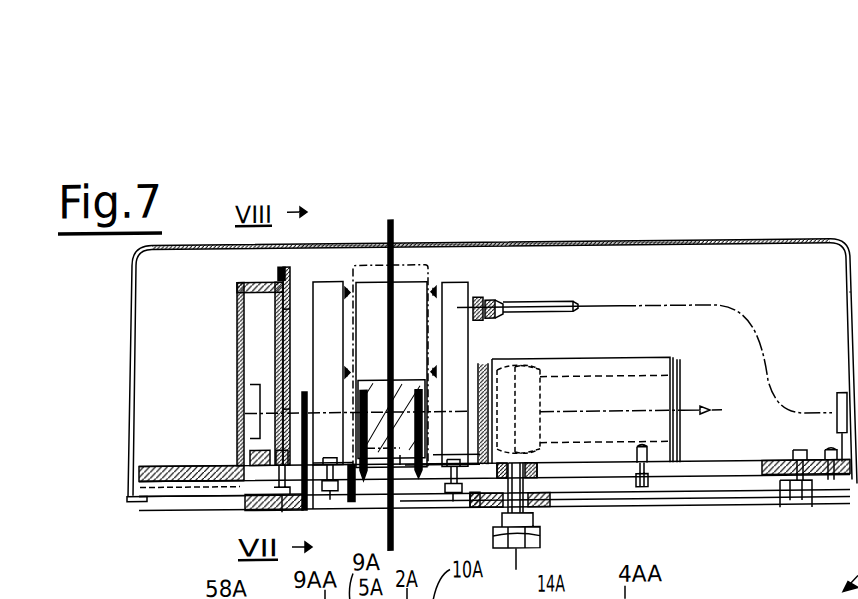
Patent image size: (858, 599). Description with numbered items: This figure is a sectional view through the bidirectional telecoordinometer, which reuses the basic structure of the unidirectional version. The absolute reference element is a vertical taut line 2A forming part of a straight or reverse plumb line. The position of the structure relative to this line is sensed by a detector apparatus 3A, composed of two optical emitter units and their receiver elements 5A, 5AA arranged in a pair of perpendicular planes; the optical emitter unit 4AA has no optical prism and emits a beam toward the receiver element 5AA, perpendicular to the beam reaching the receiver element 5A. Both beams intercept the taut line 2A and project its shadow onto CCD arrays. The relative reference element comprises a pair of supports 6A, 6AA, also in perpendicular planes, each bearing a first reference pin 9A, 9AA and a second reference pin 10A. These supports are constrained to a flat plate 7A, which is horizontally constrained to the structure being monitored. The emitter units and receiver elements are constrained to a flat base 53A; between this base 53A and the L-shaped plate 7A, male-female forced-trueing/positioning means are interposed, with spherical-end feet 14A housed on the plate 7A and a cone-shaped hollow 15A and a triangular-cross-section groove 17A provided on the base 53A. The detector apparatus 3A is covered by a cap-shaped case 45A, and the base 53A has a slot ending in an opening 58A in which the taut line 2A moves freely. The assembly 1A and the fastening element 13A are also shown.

The device housing 1A is at (480, 226).
The vertical taut line 2A is at (402, 226).
The detector apparatus 3A is at (715, 268).
The optical emitter unit 4AA is at (615, 374).
The receiver element 5A is at (410, 372).
The receiver element 5AA is at (250, 422).
The support 6A is at (313, 490).
The support 6AA is at (380, 486).
The flat plate 7A is at (702, 508).
The first reference pin 9A is at (363, 393).
The first reference pin 9AA is at (302, 399).
The second reference pin 10A is at (408, 440).
The bolt with nut 13A is at (510, 530).
The spherical-end feet 14A is at (236, 484).
The cone-shaped hollow 15A is at (809, 487).
The triangular-cross-section groove 17A is at (183, 483).
The cap-shaped case 45A is at (658, 247).
The flat base 53A is at (723, 467).
The opening 58A is at (455, 506).